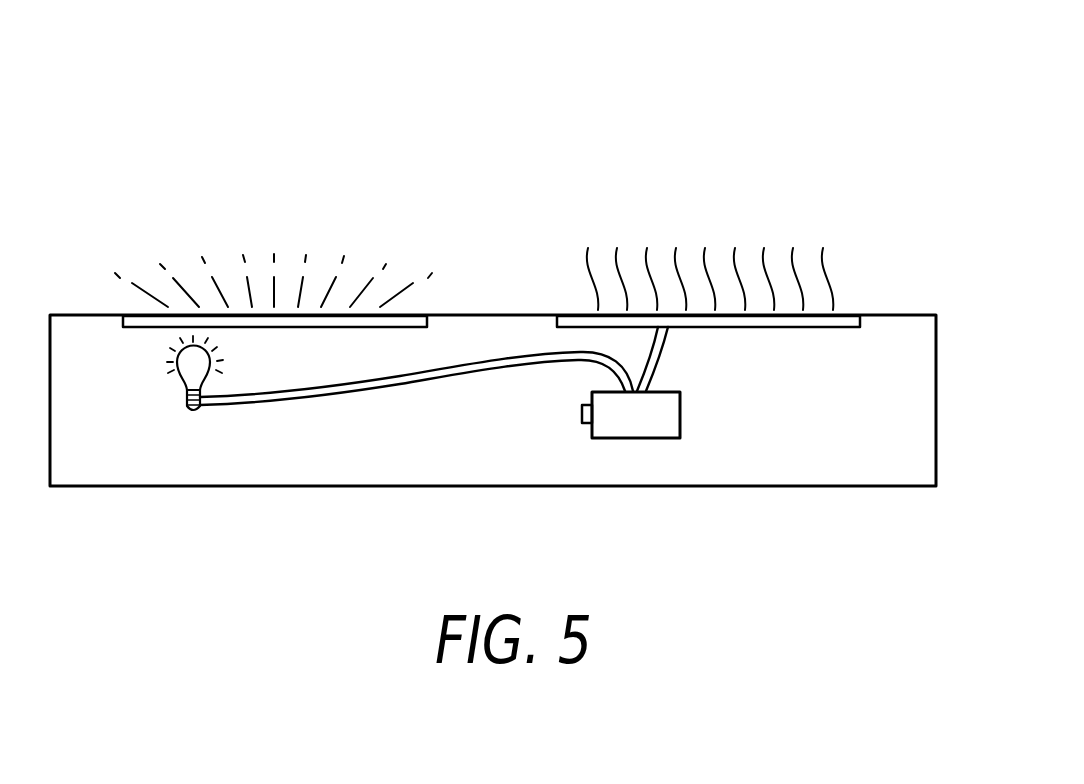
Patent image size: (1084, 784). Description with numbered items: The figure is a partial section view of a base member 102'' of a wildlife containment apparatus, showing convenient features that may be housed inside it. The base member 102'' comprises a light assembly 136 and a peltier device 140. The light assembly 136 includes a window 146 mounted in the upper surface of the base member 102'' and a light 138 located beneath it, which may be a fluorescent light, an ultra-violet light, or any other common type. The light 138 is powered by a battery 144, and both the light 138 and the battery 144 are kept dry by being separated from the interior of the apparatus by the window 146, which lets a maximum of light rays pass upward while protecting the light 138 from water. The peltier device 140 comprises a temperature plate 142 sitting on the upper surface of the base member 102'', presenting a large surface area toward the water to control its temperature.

The base member 102'' is at (493, 252).
The light assembly 136 is at (224, 273).
The light 138 is at (212, 415).
The peltier device 140 is at (723, 251).
The temperature plate 142 is at (847, 311).
The battery 144 is at (694, 413).
The window 146 is at (313, 313).